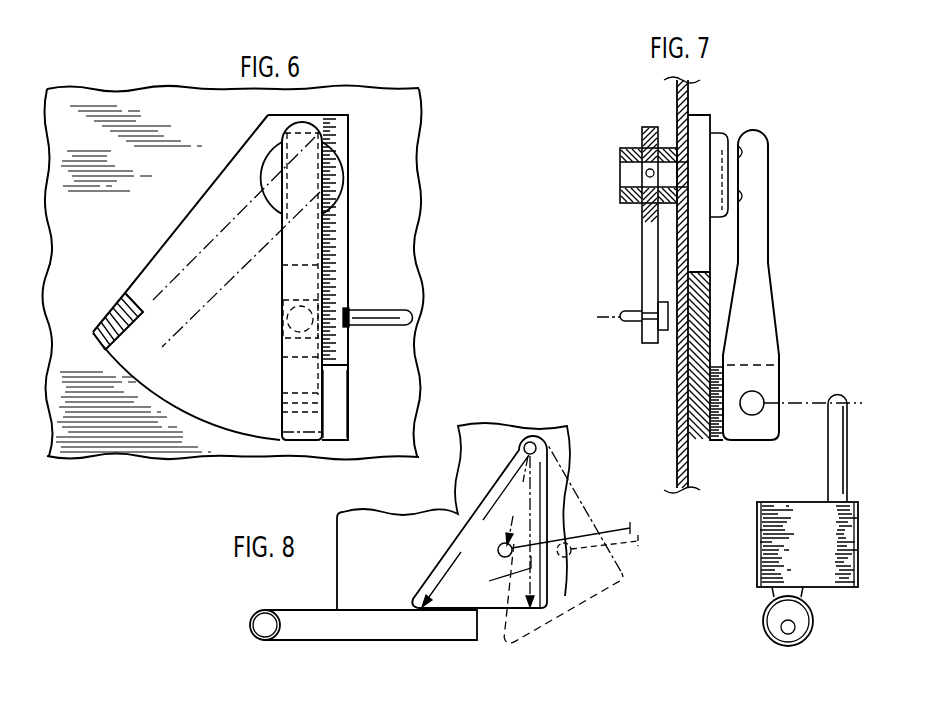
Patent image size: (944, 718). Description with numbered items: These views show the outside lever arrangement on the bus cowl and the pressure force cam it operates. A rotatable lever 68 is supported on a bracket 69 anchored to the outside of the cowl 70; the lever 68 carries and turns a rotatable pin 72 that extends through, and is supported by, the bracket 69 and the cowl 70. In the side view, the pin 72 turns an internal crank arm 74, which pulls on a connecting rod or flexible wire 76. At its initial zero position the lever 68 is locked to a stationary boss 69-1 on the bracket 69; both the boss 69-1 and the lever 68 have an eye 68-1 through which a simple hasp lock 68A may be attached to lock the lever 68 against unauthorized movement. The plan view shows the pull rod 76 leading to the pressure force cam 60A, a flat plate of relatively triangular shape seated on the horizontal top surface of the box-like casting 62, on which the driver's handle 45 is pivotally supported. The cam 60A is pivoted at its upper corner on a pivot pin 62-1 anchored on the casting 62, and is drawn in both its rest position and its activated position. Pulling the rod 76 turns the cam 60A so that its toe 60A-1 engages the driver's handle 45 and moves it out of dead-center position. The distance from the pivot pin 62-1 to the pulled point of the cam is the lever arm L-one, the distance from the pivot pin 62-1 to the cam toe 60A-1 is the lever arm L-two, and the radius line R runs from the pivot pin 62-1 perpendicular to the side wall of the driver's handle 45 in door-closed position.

In FIG. 8, the driver's handle 45 is at (263, 616).
In FIG. 8, the pivoted flat cam 60A is at (478, 503).
In FIG. 8, the cam toe 60A-1 is at (412, 605).
In FIG. 8, the box-like casting 62 is at (358, 521).
In FIG. 8, the pivot pin 62-1 is at (530, 441).
In FIG. 6, the rotatable lever 68 is at (207, 243).
In FIG. 7, the rotatable lever 68 is at (762, 280).
In FIG. 6, the eye 68-1 is at (282, 403).
In FIG. 7, the eye 68-1 is at (758, 400).
In FIG. 7, the hasp lock 68A is at (780, 538).
In FIG. 6, the bracket 69 is at (346, 378).
In FIG. 7, the bracket 69 is at (697, 412).
In FIG. 6, the stationary boss 69-1 is at (326, 434).
In FIG. 7, the cowl 70 is at (677, 368).
In FIG. 6, the rotatable pin 72 is at (347, 154).
In FIG. 7, the rotatable pin 72 is at (627, 180).
In FIG. 6, the internal crank arm 74 is at (282, 310).
In FIG. 7, the internal crank arm 74 is at (648, 240).
In FIG. 6, the connecting rod or flexible wire 76 is at (371, 310).
In FIG. 7, the connecting rod or flexible wire 76 is at (620, 313).
In FIG. 8, the connecting rod or flexible wire 76 is at (585, 542).